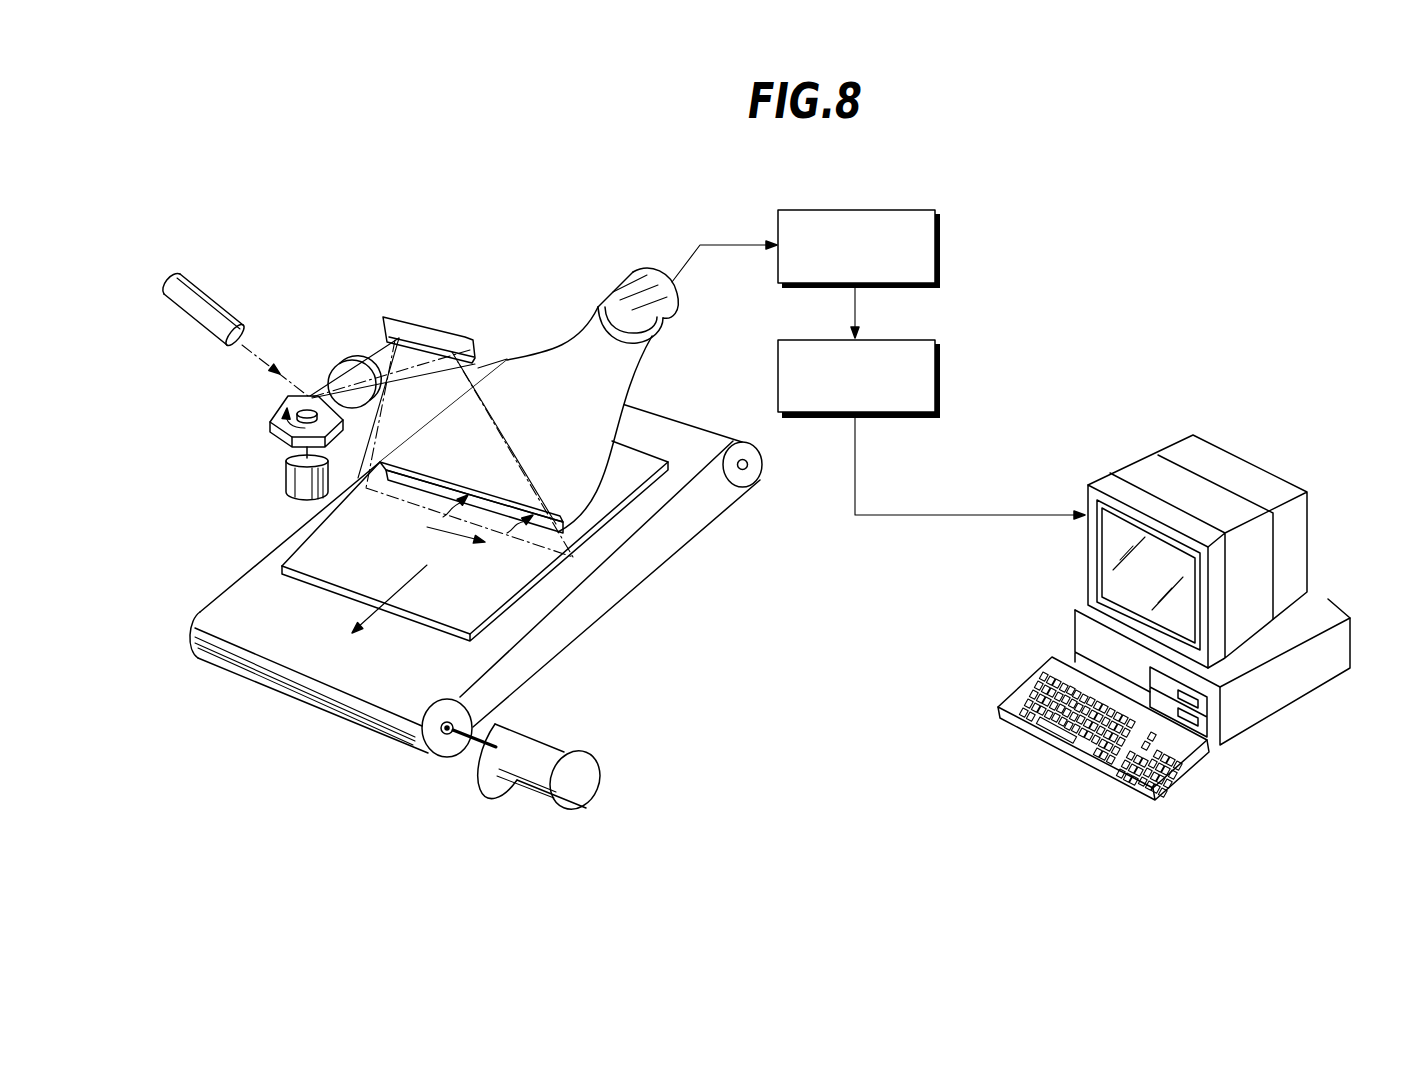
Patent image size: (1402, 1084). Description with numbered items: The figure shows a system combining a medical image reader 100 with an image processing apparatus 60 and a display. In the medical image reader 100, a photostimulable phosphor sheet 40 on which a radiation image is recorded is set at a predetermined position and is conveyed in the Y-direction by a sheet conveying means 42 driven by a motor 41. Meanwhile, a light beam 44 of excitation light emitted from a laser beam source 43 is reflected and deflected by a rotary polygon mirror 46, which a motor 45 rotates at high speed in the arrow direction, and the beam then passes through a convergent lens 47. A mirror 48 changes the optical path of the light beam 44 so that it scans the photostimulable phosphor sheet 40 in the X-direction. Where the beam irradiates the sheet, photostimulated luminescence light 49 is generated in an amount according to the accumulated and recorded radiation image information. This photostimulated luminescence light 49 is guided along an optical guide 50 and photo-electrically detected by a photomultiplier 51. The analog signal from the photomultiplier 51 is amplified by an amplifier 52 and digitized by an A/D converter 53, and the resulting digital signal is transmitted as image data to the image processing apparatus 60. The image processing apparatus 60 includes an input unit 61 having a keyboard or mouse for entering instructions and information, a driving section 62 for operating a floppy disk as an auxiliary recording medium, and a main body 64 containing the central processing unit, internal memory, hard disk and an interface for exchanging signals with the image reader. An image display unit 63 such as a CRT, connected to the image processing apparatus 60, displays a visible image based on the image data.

The photostimulable phosphor sheet 40 is at (481, 594).
The motor 41 is at (541, 739).
The sheet conveying means 42 is at (456, 662).
The laser beam source 43 is at (210, 297).
The light beam 44 is at (262, 356).
The motor 45 is at (285, 486).
The rotary polygon mirror 46 is at (268, 430).
The convergent lens 47 is at (354, 358).
The mirror 48 is at (437, 329).
The photostimulated luminescence light 49 is at (405, 483).
The optical guide 50 is at (556, 350).
The photomultiplier 51 is at (616, 290).
The amplifier 52 is at (942, 252).
The A/D converter 53 is at (942, 386).
The image processing apparatus 60 is at (1188, 570).
The input unit 61 is at (1024, 705).
The driving section 62 is at (1204, 714).
The image display unit 63 is at (1090, 483).
The main body 64 is at (1226, 671).
The medical image reader 100 is at (474, 524).